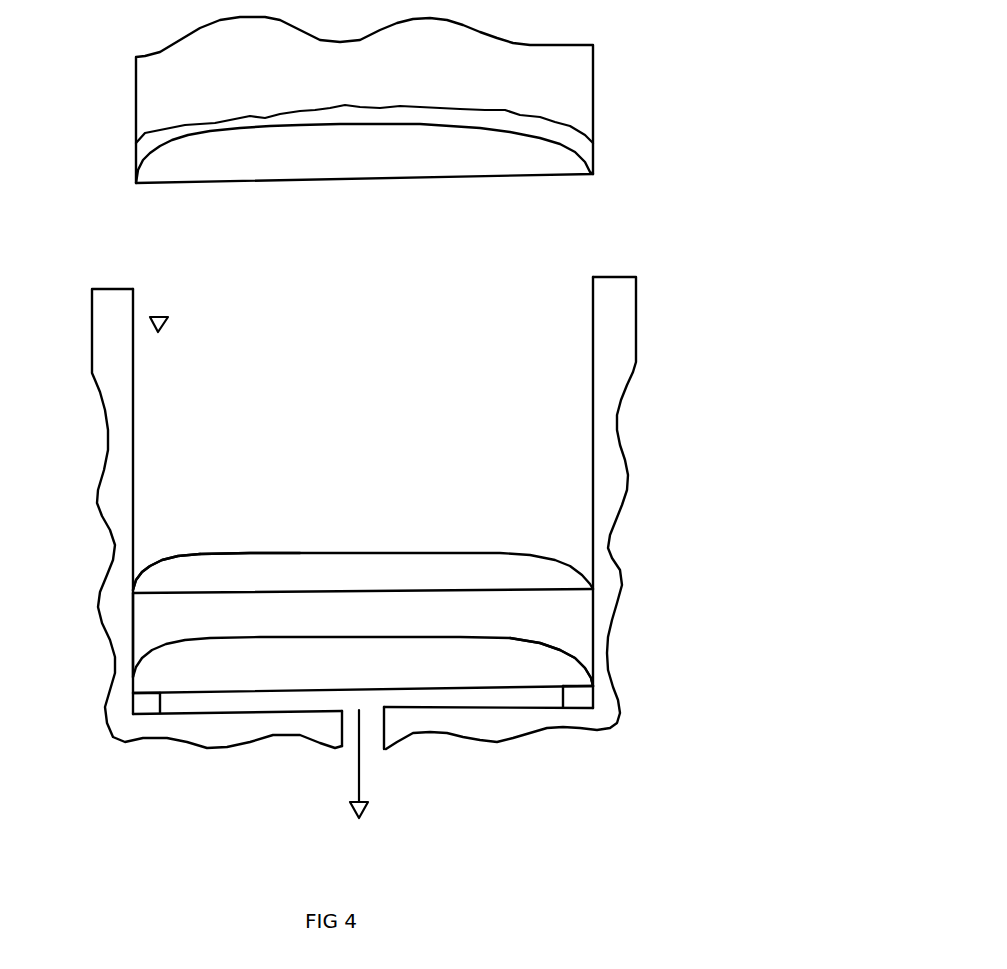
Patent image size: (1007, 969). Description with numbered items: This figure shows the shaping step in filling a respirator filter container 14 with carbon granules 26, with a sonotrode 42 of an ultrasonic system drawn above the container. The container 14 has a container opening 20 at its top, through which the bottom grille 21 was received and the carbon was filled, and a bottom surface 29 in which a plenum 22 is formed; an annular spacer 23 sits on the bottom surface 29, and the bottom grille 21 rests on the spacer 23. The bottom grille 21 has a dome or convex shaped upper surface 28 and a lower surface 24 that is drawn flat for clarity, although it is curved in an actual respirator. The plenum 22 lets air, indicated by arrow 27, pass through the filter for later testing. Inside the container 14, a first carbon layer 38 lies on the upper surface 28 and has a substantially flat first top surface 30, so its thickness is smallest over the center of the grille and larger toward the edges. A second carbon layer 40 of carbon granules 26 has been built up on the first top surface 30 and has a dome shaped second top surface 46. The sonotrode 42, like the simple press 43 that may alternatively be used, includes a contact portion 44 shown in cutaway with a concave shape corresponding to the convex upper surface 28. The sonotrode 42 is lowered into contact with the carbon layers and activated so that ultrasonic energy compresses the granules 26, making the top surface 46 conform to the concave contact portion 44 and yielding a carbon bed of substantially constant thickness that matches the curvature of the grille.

The container 14 is at (610, 320).
The container opening 20 is at (152, 323).
The bottom grille 21 is at (165, 677).
The plenum 22 is at (350, 727).
The annular spacer 23 is at (583, 703).
The lower surface of the bottom grille 24 is at (407, 687).
The carbon granules 26 is at (462, 562).
The arrow 27 is at (355, 777).
The upper surface of the bottom grille 28 is at (583, 656).
The bottom surface of the container 29 is at (253, 713).
The first top surface 30 is at (525, 587).
The first carbon layer 38 is at (142, 635).
The second carbon layer 40 is at (167, 575).
The sonotrode 42 is at (563, 113).
The press 43 is at (152, 90).
The contact portion 44 is at (168, 173).
The second top surface 46 is at (180, 565).